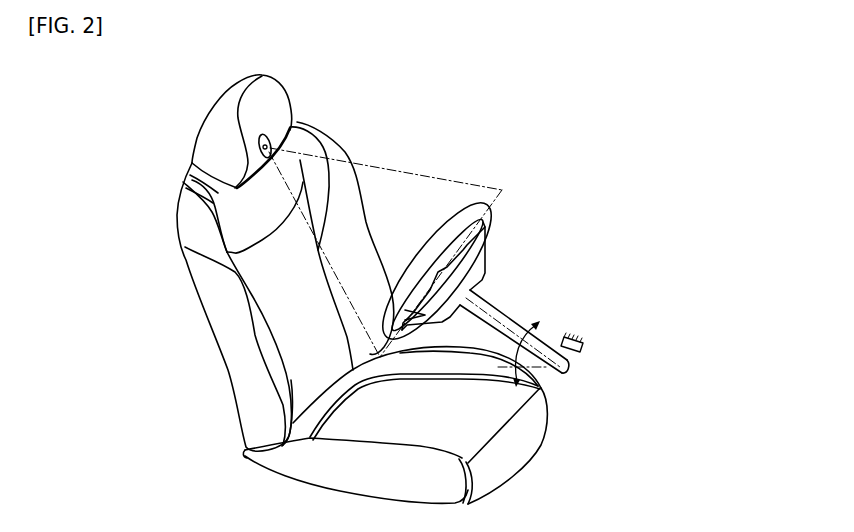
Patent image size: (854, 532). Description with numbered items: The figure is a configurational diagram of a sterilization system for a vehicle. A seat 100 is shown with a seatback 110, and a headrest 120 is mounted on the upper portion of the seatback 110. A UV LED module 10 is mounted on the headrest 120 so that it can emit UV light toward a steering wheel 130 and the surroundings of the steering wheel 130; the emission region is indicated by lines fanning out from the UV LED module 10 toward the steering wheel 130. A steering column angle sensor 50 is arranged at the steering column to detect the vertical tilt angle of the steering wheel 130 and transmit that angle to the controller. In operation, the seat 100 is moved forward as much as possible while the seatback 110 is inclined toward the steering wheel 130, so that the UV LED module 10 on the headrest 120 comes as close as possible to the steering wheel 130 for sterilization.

The seat 100 is at (330, 289).
The seatback 110 is at (206, 292).
The headrest 120 is at (216, 128).
The UV LED module 10 is at (281, 115).
The steering wheel 130 is at (468, 207).
The steering column angle sensor 50 is at (580, 352).